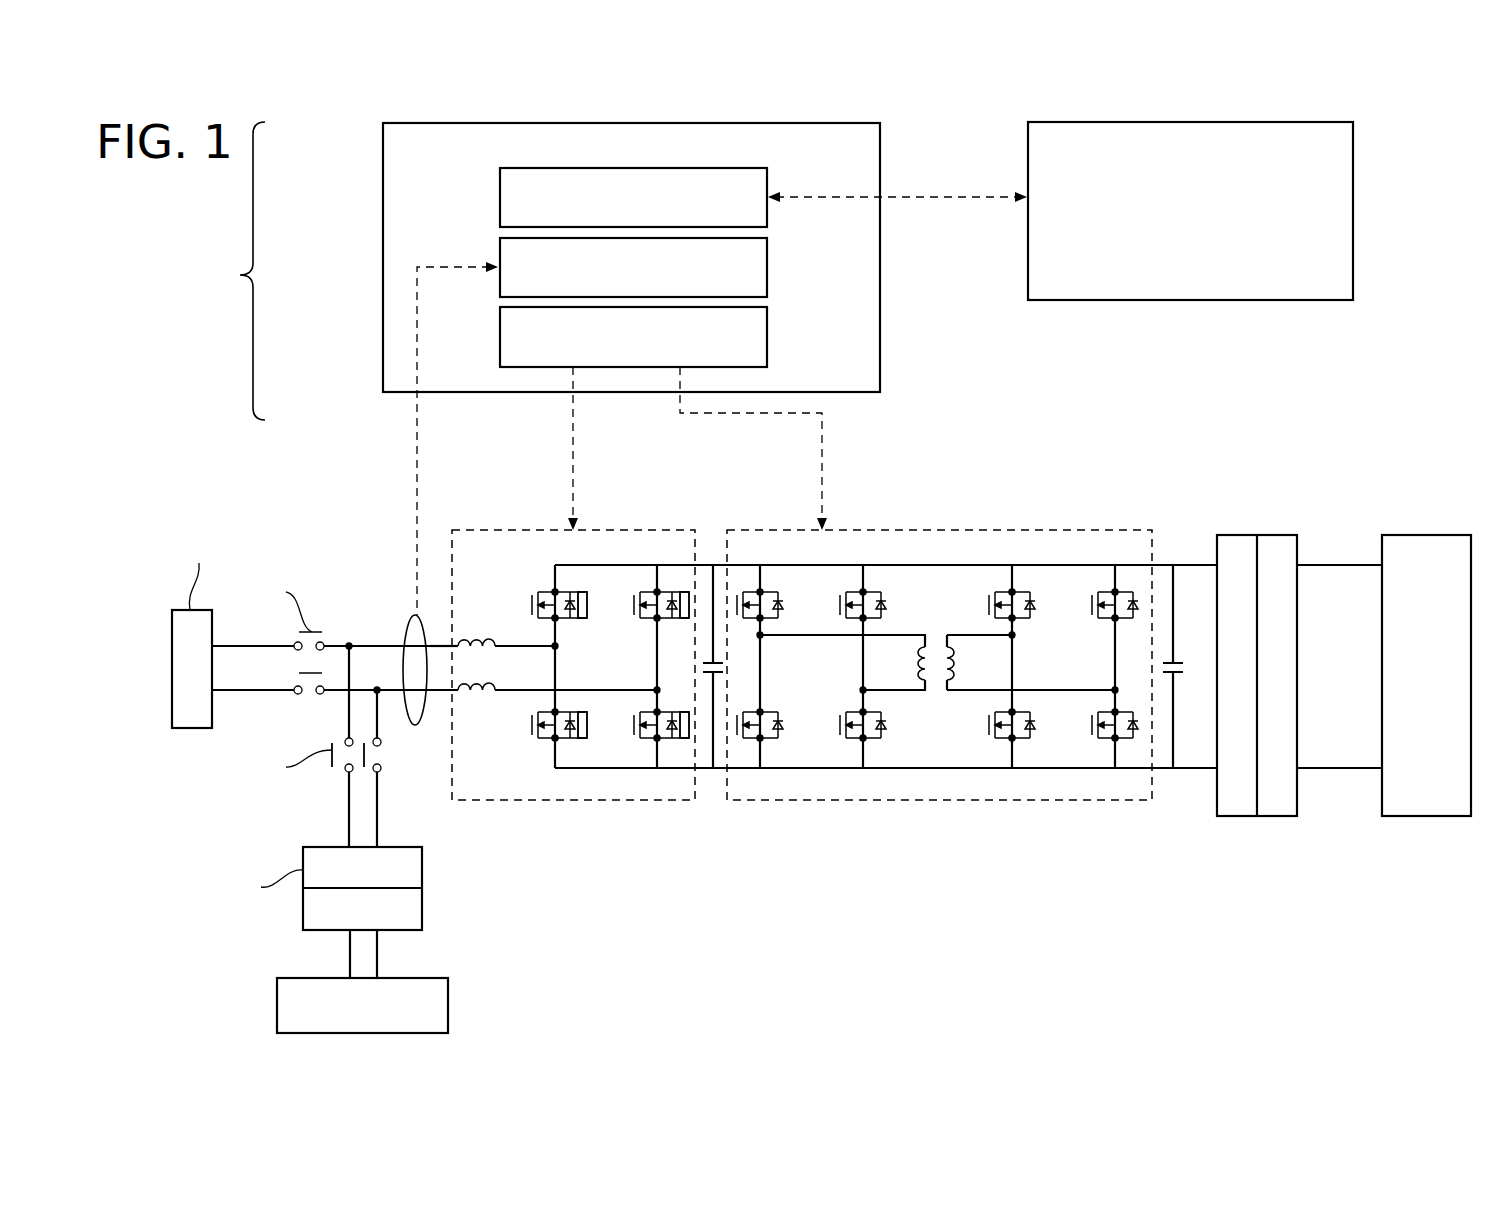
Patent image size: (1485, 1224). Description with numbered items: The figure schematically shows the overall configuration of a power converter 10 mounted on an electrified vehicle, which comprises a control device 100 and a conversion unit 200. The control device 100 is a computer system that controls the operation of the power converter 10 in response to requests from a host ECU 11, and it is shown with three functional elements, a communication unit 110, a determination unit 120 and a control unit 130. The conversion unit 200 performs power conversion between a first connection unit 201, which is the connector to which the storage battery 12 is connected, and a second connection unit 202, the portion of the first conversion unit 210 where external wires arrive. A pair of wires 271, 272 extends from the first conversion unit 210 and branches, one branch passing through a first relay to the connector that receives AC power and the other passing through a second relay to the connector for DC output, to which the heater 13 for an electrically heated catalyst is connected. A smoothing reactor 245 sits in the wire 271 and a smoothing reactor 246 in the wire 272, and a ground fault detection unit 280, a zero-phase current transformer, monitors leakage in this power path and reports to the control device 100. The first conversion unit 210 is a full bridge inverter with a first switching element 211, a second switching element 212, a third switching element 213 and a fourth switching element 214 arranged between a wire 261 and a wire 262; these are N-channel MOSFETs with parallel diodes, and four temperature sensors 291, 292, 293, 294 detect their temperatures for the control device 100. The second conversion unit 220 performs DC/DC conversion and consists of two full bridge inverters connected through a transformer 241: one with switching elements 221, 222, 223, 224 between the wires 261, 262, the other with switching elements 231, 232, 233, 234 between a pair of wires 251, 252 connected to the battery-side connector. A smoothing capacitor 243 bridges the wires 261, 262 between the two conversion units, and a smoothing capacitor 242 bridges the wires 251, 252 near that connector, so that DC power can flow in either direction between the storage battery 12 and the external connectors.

The power converter 10 is at (238, 275).
The control device 100 is at (383, 168).
The communication unit 110 is at (767, 180).
The determination unit 120 is at (767, 263).
The control unit 130 is at (767, 330).
The host ECU 11 is at (1353, 165).
The storage battery 12 is at (1425, 816).
The heater 13 is at (448, 1005).
The conversion unit 200 is at (384, 484).
The first connection unit 201 is at (1240, 535).
The second connection unit 202 is at (447, 638).
The first conversion unit 210 is at (617, 800).
The first switching element 211 is at (548, 590).
The second switching element 212 is at (553, 742).
The third switching element 213 is at (648, 590).
The fourth switching element 214 is at (652, 742).
The second conversion unit 220 is at (955, 800).
The switching element 221 is at (767, 590).
The switching element 222 is at (767, 742).
The switching element 223 is at (870, 590).
The switching element 224 is at (870, 742).
The switching element 231 is at (1020, 590).
The switching element 232 is at (1020, 742).
The switching element 233 is at (1122, 590).
The switching element 234 is at (1122, 742).
The transformer 241 is at (957, 640).
The smoothing capacitor 242 is at (1181, 674).
The smoothing capacitor 243 is at (713, 772).
The smoothing reactor 245 is at (473, 636).
The smoothing reactor 246 is at (472, 693).
The wire 251 is at (1195, 565).
The wire 252 is at (1195, 770).
The wire 261 is at (601, 565).
The wire 262 is at (600, 770).
The wire 271 is at (366, 642).
The wire 272 is at (387, 693).
The ground fault detection unit 280 is at (428, 636).
The temperature sensor 291 is at (582, 621).
The temperature sensor 292 is at (583, 745).
The temperature sensor 293 is at (686, 591).
The temperature sensor 294 is at (686, 745).